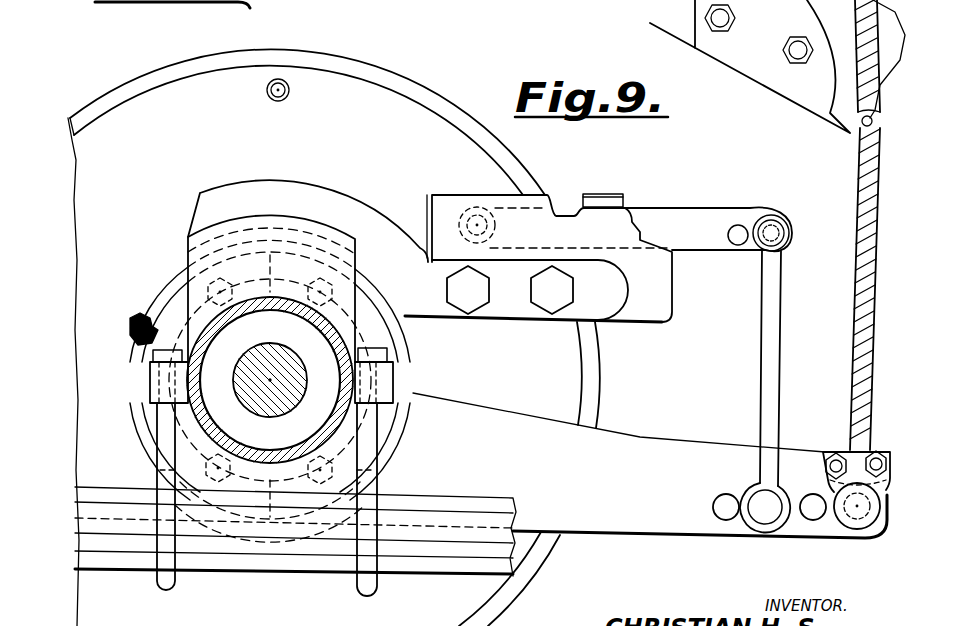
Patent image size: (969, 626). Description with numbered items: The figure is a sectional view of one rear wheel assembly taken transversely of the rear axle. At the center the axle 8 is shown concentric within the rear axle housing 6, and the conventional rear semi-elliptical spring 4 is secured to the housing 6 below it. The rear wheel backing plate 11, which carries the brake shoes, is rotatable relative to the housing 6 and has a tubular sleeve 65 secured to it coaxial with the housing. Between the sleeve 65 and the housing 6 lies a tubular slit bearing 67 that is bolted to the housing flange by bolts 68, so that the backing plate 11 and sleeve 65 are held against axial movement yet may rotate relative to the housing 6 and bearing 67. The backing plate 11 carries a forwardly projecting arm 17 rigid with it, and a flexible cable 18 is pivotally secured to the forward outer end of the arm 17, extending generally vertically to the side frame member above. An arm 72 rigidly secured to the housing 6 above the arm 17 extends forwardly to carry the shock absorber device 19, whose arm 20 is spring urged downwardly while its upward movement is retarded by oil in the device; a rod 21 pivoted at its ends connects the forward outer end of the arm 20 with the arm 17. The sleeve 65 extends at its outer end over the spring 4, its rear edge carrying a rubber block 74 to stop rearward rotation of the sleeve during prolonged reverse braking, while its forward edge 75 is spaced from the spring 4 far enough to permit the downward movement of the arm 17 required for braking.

The rear semi-elliptical spring 4 is at (455, 570).
The rear axle housing 6 is at (285, 455).
The axle 8 is at (268, 385).
The backing plate 11 is at (415, 118).
The arm 17 is at (668, 452).
The flexible cable 18 is at (853, 275).
The shock absorber device 19 is at (543, 192).
The arm 20 is at (682, 218).
The rod 21 is at (770, 333).
The tubular sleeve 65 is at (405, 418).
The tubular slit bearing 67 is at (390, 353).
The bolts 68 is at (333, 470).
The arm 72 is at (518, 312).
The rubber block 74 is at (140, 316).
The forward edge 75 is at (397, 320).